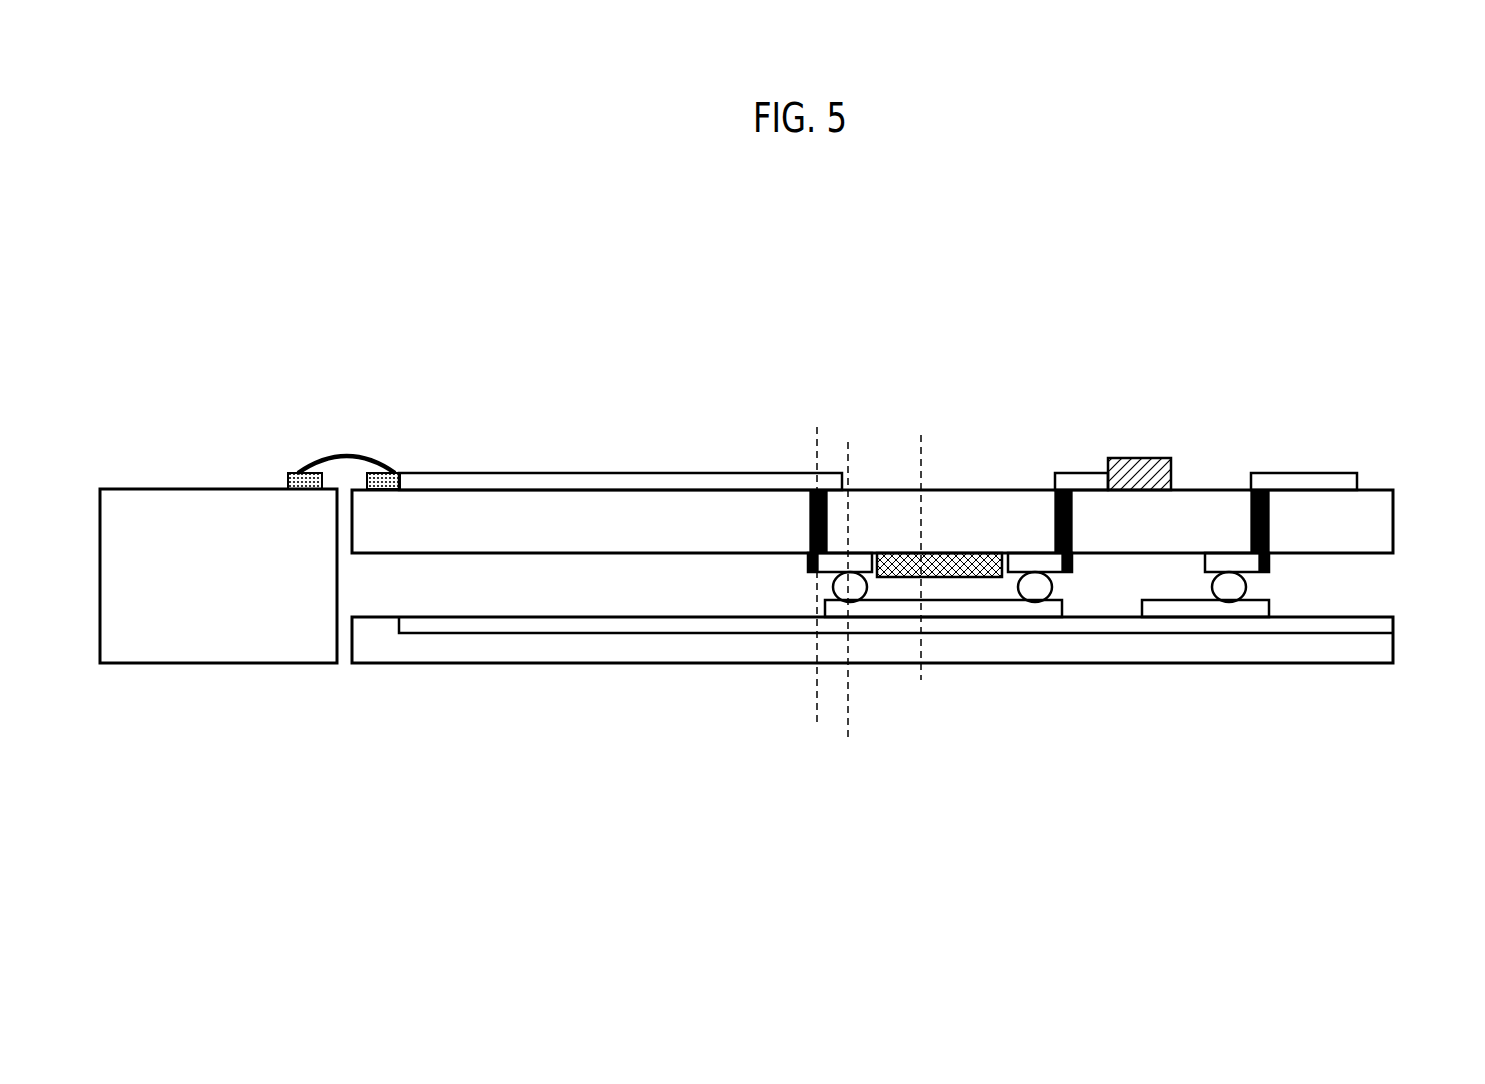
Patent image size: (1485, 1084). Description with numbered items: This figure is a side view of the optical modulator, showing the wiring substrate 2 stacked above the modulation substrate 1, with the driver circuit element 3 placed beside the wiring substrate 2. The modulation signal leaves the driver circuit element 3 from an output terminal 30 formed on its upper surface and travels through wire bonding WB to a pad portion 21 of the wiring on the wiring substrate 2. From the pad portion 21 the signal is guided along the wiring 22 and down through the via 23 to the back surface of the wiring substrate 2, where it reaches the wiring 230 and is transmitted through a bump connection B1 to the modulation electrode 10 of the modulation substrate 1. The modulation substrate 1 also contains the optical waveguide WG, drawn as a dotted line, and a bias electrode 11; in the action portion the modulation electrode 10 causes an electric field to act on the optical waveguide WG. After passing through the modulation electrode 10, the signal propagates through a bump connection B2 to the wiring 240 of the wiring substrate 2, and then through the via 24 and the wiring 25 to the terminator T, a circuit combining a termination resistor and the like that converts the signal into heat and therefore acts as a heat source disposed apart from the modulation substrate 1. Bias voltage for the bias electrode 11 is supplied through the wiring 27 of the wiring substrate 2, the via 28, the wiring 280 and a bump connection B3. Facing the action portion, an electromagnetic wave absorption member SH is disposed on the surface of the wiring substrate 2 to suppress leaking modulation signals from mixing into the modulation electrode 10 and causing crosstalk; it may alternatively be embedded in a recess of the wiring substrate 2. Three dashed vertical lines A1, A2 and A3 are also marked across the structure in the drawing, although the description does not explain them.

The modulation substrate 1 is at (627, 648).
The wiring substrate 2 is at (512, 508).
The driver circuit element 3 is at (187, 505).
The modulation electrode 10 is at (993, 607).
The bias electrode 11 is at (1182, 607).
The pad portion 21 is at (394, 476).
The wiring 22 is at (608, 473).
The via 23 is at (810, 530).
The via 24 is at (1052, 520).
The wiring 25 is at (1080, 482).
The wiring 27 is at (1302, 480).
The via 28 is at (1250, 520).
The output terminal 30 is at (293, 473).
The wiring 230 is at (812, 566).
The wiring 240 is at (1062, 560).
The wiring 280 is at (1270, 560).
The wire bonding WB is at (352, 458).
The optical waveguide WG is at (449, 625).
The electromagnetic wave absorption member SH is at (977, 562).
The terminator T is at (1140, 475).
The cross-section line A1 is at (820, 561).
The cross-section line A2 is at (850, 610).
The cross-section line A3 is at (924, 544).
The bump connection B1 is at (862, 583).
The bump connection B2 is at (1042, 583).
The bump connection B3 is at (1237, 583).